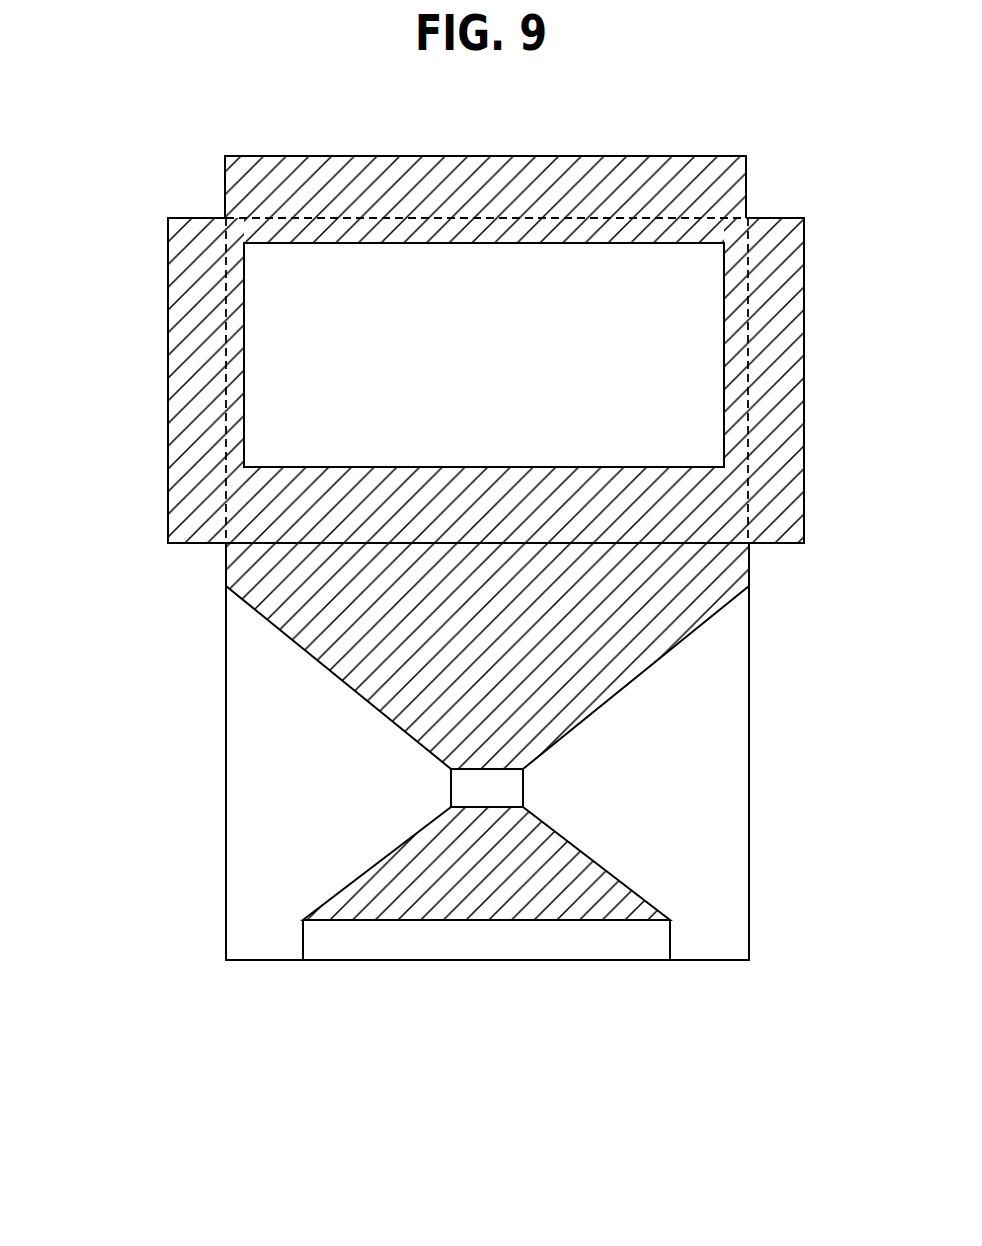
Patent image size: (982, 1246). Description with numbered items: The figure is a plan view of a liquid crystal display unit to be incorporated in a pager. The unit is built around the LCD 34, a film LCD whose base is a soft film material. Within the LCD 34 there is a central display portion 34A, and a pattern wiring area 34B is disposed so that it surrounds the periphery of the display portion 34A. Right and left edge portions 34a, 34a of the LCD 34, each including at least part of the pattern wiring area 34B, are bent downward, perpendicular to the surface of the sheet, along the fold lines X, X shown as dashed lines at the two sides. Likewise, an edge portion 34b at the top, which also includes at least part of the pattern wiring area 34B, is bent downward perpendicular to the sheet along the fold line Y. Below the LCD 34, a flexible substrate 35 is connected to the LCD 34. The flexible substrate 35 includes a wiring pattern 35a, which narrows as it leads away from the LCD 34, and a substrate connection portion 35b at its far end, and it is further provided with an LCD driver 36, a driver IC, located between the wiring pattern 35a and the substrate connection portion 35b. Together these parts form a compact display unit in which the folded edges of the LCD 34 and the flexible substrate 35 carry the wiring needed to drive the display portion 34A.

The LCD 34 is at (62, 195).
The right and left edge portions 34a is at (190, 352).
The edge portion 34b is at (460, 156).
The display portion 34A is at (518, 381).
The pattern wiring area 34B is at (592, 232).
The fold lines X is at (206, 283).
The fold line Y is at (345, 212).
The flexible substrate 35 is at (226, 760).
The wiring pattern 35a is at (702, 625).
The substrate connection portion 35b is at (471, 946).
The LCD driver 36 is at (510, 785).